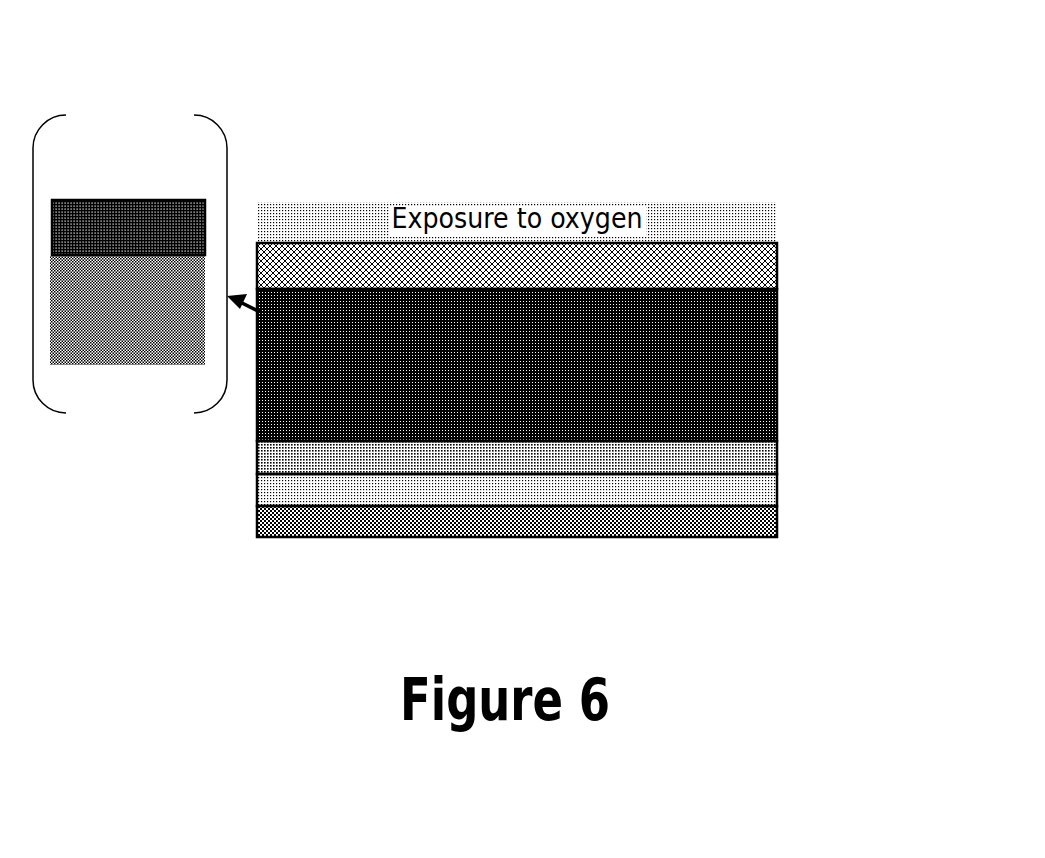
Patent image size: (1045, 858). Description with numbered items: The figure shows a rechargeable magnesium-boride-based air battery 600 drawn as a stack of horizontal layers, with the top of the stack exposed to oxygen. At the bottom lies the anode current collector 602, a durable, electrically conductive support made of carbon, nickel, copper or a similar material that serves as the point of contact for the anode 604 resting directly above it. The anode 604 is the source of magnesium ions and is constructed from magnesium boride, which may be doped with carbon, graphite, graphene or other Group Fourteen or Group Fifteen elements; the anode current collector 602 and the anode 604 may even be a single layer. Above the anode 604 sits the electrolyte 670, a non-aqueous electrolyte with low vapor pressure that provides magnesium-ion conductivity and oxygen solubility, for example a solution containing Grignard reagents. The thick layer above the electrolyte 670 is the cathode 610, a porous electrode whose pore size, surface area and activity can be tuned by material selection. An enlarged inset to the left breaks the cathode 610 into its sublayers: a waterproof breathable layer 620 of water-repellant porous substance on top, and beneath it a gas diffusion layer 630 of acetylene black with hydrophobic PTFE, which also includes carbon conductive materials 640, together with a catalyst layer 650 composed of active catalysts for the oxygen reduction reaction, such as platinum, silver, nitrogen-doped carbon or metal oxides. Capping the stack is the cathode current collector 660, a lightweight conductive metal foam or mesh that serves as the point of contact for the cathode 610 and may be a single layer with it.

The magnesium-boride-based air battery 600 is at (602, 289).
The cathode current collector 660 is at (767, 258).
The cathode 610 is at (767, 344).
The electrolyte 670 is at (767, 458).
The anode 604 is at (767, 495).
The anode current collector 602 is at (767, 522).
The waterproof breathable layer 620 is at (128, 227).
The gas diffusion layer 630 is at (127, 310).
The carbon conductive materials 640 is at (127, 310).
The catalyst layer 650 is at (127, 310).